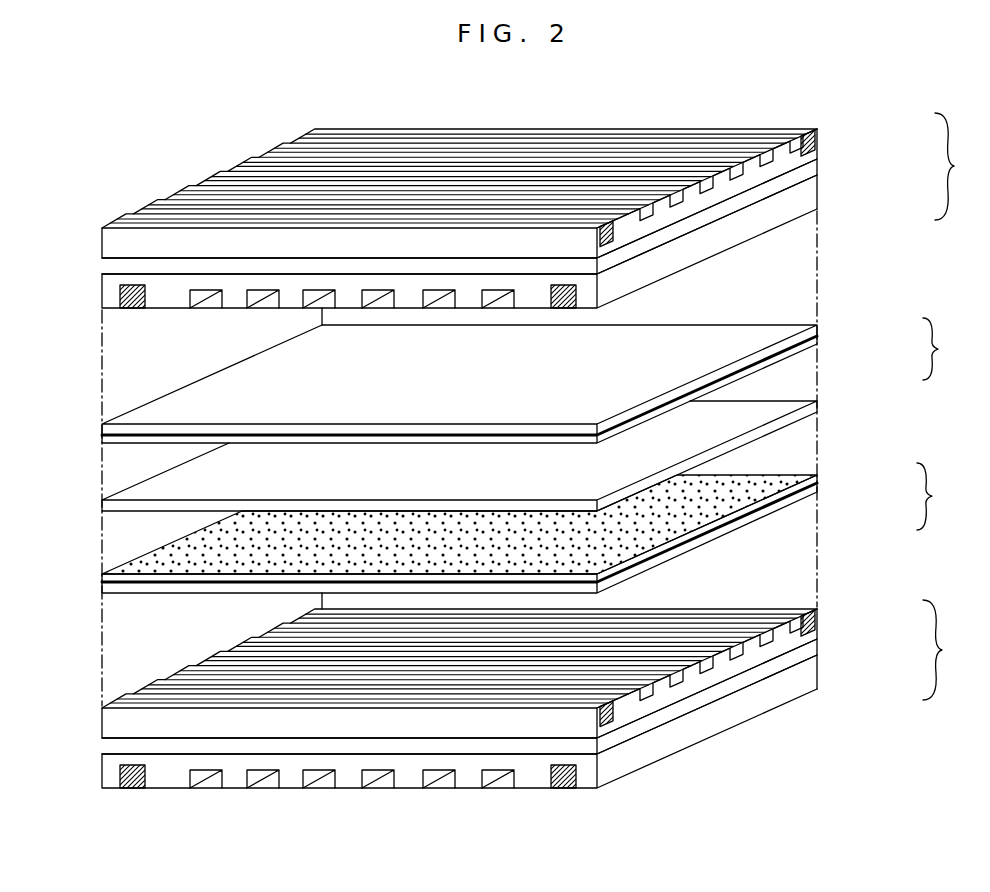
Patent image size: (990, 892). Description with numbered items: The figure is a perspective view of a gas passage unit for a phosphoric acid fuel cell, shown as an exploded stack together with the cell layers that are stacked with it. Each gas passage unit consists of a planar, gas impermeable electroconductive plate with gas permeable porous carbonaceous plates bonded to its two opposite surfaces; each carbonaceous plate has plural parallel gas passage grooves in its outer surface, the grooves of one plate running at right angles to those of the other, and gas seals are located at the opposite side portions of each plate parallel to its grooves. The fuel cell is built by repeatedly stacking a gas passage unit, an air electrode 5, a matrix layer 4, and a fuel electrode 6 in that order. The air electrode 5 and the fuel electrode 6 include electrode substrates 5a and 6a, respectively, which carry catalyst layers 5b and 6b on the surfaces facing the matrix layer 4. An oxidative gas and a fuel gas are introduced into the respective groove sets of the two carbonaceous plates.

The air electrode 5 is at (532, 378).
The electrode substrate 5a is at (780, 330).
The catalyst layer 5b is at (793, 355).
The matrix layer 4 is at (793, 418).
The fuel electrode 6 is at (530, 528).
The electrode substrate 6a is at (797, 503).
The catalyst layer 6b is at (790, 477).